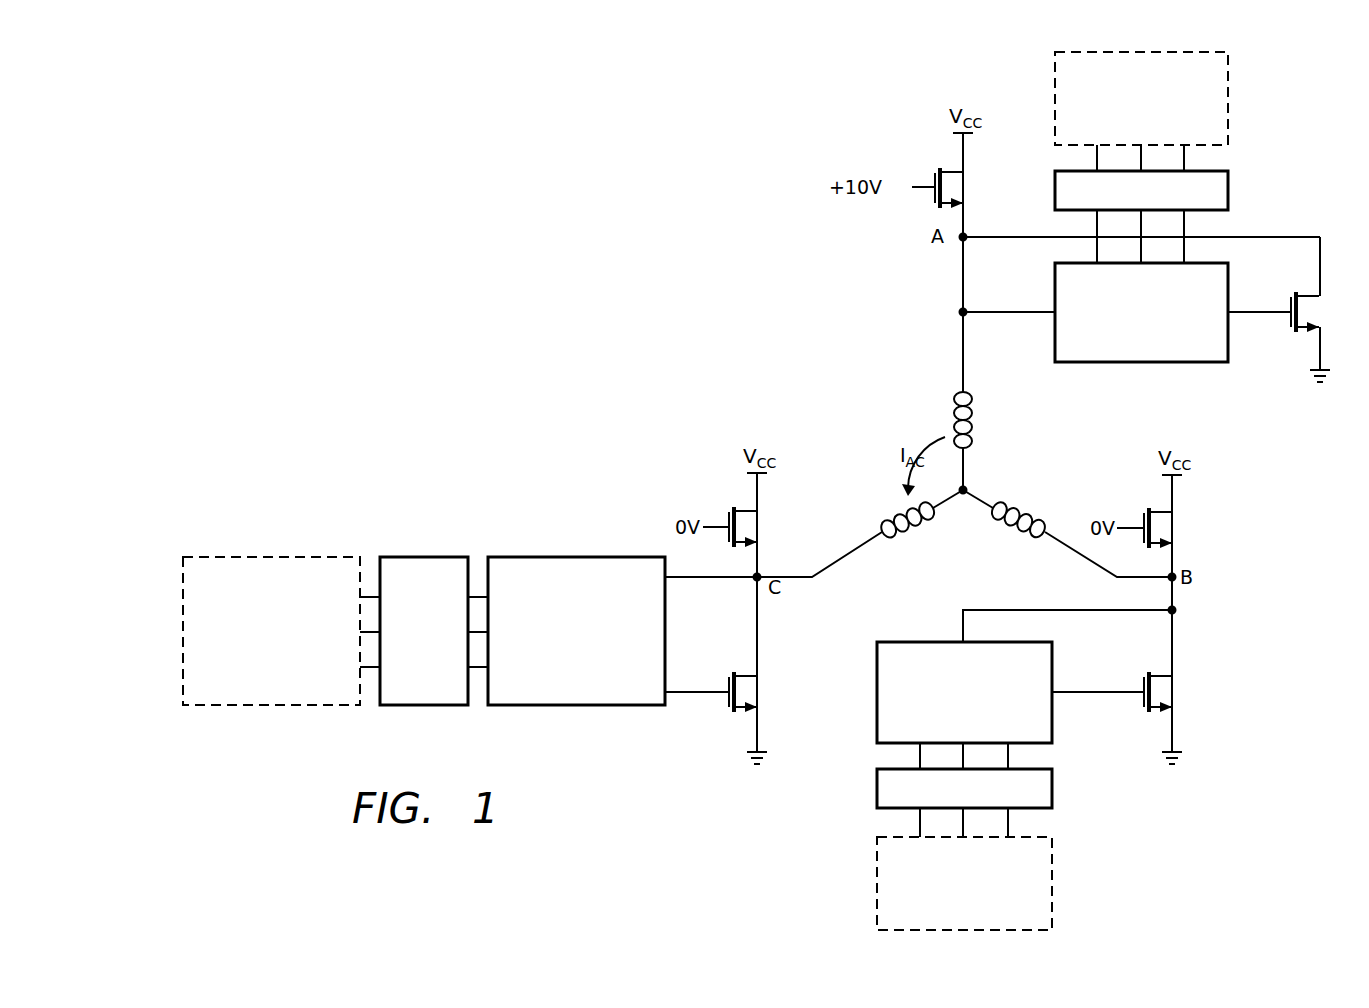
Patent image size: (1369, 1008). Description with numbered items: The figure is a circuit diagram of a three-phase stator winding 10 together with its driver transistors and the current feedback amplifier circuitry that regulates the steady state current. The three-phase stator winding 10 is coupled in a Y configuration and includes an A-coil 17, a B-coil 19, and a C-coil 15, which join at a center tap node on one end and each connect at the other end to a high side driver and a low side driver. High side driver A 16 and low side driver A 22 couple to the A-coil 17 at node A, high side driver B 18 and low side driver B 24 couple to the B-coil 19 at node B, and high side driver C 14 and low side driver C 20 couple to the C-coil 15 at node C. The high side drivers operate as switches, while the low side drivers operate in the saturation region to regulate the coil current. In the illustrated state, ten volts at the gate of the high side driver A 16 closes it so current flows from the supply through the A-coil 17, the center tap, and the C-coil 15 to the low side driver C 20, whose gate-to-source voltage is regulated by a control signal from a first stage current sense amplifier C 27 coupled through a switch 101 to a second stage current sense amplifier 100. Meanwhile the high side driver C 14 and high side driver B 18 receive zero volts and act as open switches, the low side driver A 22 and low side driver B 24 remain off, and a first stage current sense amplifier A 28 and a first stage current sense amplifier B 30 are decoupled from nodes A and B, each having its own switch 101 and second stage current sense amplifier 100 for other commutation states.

The three-phase stator winding 10 is at (955, 541).
The high side driver C (HSDC) 14 is at (727, 515).
The C-coil 15 is at (899, 515).
The high side driver A (HSDA) 16 is at (933, 180).
The A-coil 17 is at (955, 412).
The high side driver B (HSDB) 18 is at (1141, 518).
The B-coil 19 is at (1028, 514).
The low side driver C (LSDC) 20 is at (727, 704).
The low side driver A (LSDA) 22 is at (1288, 324).
The low side driver B (LSDB) 24 is at (1141, 704).
The first stage current sense amplifier C 27 is at (515, 557).
The first stage current sense amplifier A 28 is at (1190, 368).
The first stage current sense amplifier B 30 is at (895, 636).
The second stage current sense amplifier 100 is at (1230, 80).
The switch 101 is at (1230, 188).